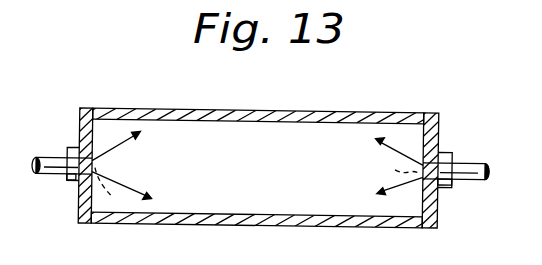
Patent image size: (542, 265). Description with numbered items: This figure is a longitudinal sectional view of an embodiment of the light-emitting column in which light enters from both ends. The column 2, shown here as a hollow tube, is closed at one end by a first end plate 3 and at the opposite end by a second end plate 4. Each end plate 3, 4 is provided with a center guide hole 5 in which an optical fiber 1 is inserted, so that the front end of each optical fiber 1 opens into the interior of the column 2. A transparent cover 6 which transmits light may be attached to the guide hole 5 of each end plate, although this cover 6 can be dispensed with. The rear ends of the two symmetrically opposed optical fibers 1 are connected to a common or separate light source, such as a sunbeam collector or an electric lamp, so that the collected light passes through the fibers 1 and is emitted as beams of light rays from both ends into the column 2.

The optical fiber 1 is at (54, 161).
The column 2 is at (275, 110).
The first end plate 3 is at (83, 125).
The second end plate 4 is at (430, 198).
The guide hole 5 is at (67, 185).
The transparent cover 6 is at (257, 187).